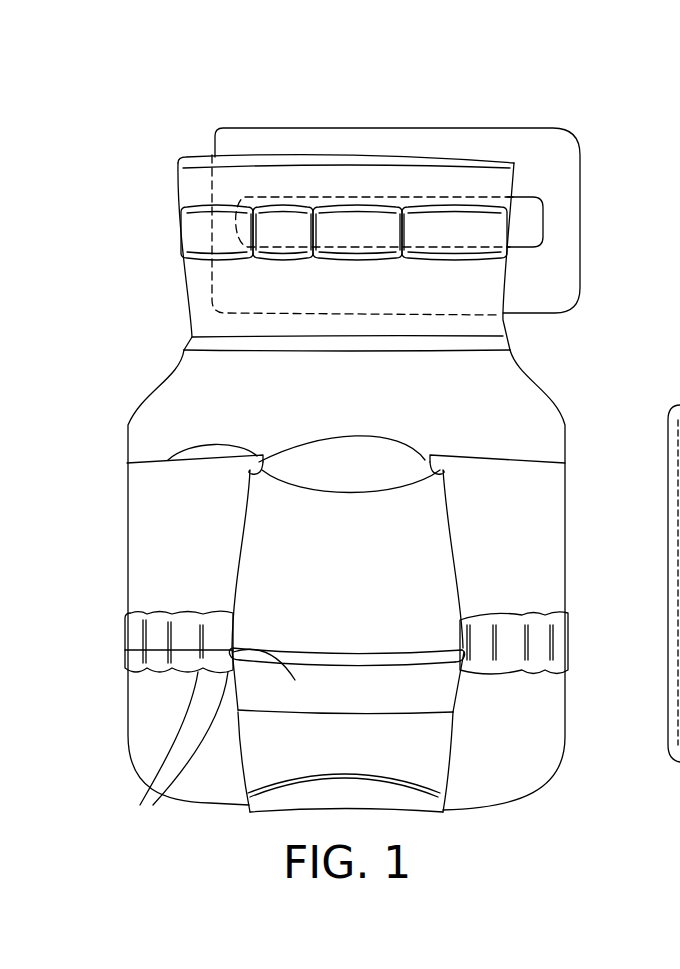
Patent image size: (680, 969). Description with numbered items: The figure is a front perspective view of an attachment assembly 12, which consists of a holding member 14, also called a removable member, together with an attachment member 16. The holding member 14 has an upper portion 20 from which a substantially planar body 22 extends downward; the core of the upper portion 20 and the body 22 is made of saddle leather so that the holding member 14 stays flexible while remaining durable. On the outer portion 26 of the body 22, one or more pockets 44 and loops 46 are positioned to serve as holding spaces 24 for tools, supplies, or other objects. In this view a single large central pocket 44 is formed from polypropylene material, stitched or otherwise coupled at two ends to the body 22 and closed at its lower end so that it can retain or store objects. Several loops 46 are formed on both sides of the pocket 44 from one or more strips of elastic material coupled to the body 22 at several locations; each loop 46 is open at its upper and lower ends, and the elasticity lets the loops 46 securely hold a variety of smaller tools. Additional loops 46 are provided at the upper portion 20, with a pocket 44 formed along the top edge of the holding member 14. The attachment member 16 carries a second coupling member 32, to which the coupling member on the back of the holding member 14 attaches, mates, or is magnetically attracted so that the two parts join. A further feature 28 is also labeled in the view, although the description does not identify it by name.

The attachment assembly 12 is at (108, 148).
The holding member 14 is at (98, 337).
The attachment member 16 is at (515, 122).
The upper portion 20 is at (175, 257).
The body 22 is at (173, 440).
The holding spaces 24 is at (413, 438).
The outer portion 26 is at (172, 550).
The side pocket 28 is at (267, 470).
The second coupling member 32 is at (533, 225).
The pocket 44 is at (197, 153).
The loops 46 is at (186, 666).